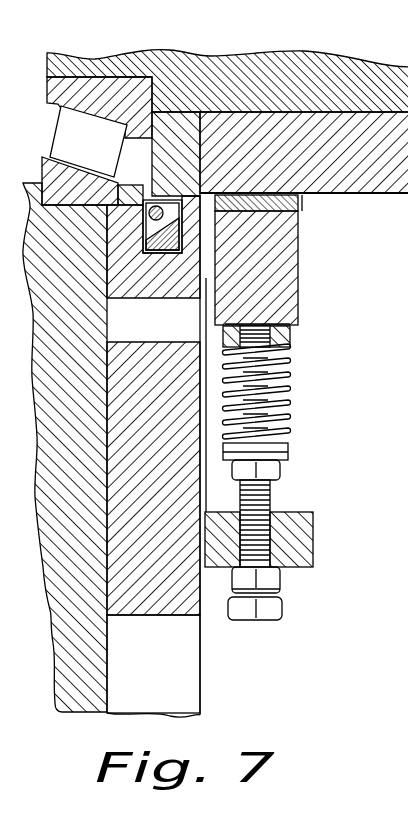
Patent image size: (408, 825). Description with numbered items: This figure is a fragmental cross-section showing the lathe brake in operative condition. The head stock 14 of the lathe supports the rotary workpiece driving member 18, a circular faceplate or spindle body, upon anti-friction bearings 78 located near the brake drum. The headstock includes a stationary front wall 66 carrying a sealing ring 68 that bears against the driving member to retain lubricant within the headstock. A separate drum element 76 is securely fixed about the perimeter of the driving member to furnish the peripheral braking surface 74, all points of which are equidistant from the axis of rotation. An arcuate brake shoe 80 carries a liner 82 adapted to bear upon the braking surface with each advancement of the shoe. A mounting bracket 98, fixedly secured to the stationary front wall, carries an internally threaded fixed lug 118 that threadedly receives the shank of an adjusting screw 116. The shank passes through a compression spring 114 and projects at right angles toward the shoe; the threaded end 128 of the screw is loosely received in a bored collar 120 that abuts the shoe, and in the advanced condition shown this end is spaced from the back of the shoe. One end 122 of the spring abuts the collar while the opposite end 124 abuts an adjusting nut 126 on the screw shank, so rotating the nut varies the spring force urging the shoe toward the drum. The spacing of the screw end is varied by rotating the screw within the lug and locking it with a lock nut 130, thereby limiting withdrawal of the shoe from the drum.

The head stock 14 is at (62, 653).
The driving member 18 is at (170, 52).
The stationary front wall 66 is at (130, 290).
The sealing ring 68 is at (157, 252).
The braking surface 74 is at (303, 199).
The drum element 76 is at (367, 195).
The anti-friction bearings 78 is at (67, 133).
The brake shoe 80 is at (298, 273).
The liner 82 is at (306, 199).
The mounting bracket 98 is at (162, 617).
The compression spring 114 is at (287, 398).
The adjusting screw 116 is at (278, 610).
The fixed lug 118 is at (313, 530).
The bored collar 120 is at (290, 343).
The spring end 122 is at (287, 350).
The spring end 124 is at (287, 443).
The adjusting nut 126 is at (277, 470).
The threaded end of screw 128 is at (263, 322).
The lock nut 130 is at (272, 578).